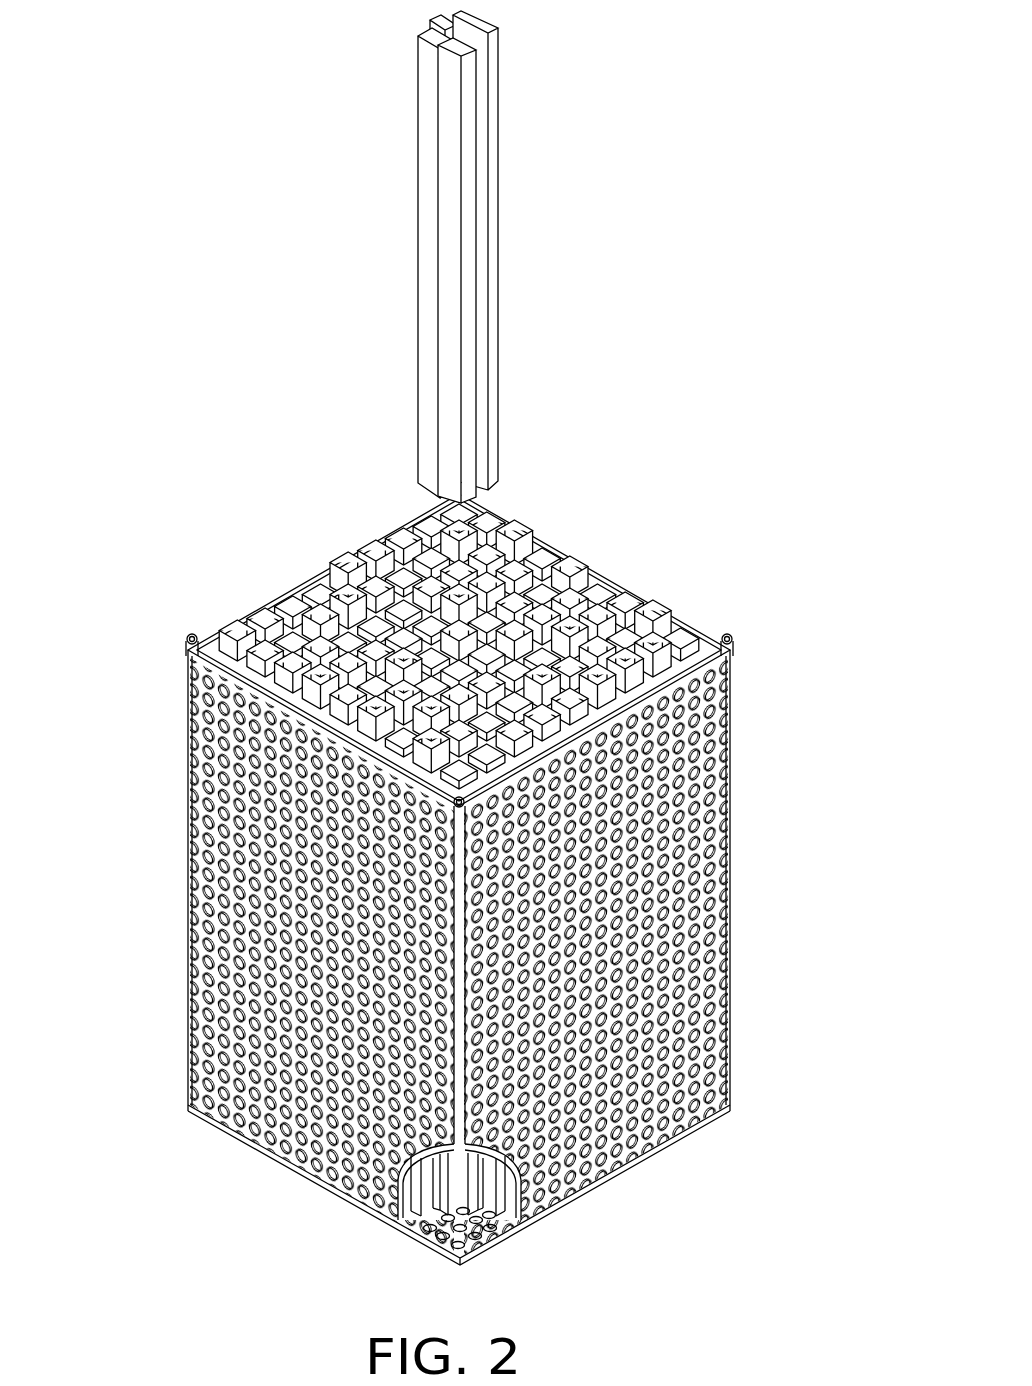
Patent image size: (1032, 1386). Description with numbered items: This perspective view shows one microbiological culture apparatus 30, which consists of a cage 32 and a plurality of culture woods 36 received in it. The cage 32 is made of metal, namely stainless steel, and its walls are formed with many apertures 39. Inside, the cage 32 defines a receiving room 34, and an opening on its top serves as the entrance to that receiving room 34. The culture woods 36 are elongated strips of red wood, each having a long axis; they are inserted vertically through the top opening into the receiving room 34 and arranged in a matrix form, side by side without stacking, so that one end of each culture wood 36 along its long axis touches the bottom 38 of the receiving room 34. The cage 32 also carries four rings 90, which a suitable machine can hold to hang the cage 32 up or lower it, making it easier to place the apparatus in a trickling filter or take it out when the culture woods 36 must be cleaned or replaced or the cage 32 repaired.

The microbiological culture apparatus 30 is at (481, 663).
The cage 32 is at (465, 905).
The receiving room 34 is at (490, 400).
The culture woods 36 is at (470, 170).
The bottom 38 is at (492, 1228).
The apertures 39 is at (708, 690).
The rings 90 is at (725, 618).